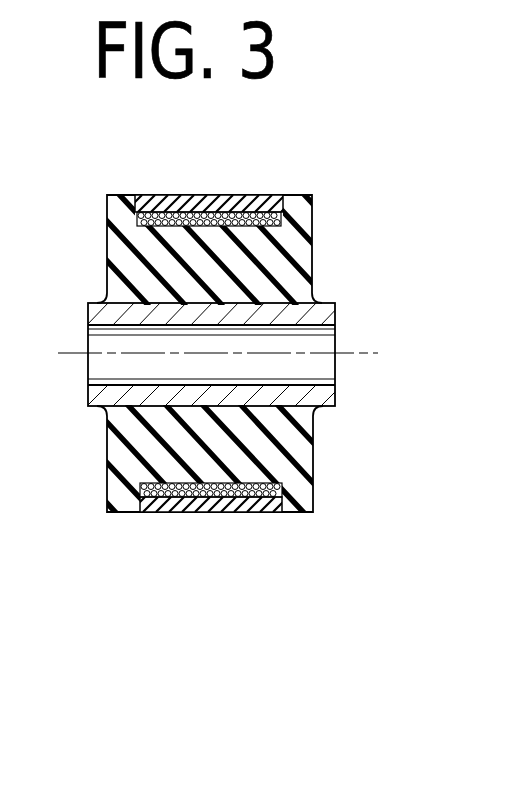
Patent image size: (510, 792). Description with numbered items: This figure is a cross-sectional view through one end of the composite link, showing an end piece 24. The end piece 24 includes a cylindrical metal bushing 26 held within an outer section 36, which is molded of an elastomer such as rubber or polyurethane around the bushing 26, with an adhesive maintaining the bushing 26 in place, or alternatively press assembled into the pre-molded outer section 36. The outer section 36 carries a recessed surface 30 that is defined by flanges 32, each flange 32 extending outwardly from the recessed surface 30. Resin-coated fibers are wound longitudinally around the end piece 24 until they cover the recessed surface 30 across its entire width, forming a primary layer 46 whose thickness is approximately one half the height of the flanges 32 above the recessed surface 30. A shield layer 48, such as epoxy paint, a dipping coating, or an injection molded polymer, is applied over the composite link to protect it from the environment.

The end piece 24 is at (371, 207).
The bushing 26 is at (313, 398).
The recessed surface 30 is at (320, 235).
The flange 32 is at (126, 202).
The outer section 36 is at (268, 453).
The primary layer 46 is at (200, 200).
The shield layer 48 is at (247, 212).